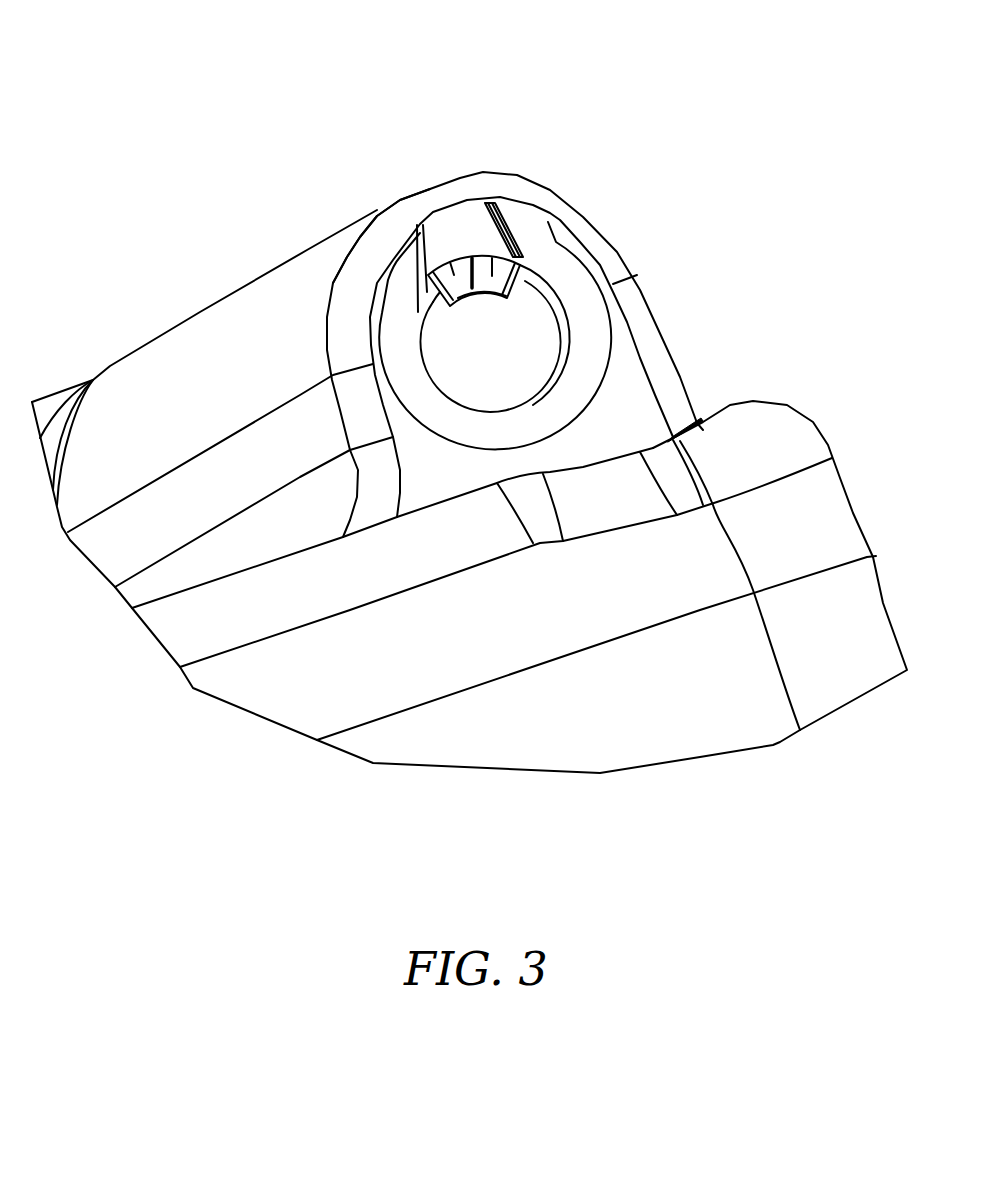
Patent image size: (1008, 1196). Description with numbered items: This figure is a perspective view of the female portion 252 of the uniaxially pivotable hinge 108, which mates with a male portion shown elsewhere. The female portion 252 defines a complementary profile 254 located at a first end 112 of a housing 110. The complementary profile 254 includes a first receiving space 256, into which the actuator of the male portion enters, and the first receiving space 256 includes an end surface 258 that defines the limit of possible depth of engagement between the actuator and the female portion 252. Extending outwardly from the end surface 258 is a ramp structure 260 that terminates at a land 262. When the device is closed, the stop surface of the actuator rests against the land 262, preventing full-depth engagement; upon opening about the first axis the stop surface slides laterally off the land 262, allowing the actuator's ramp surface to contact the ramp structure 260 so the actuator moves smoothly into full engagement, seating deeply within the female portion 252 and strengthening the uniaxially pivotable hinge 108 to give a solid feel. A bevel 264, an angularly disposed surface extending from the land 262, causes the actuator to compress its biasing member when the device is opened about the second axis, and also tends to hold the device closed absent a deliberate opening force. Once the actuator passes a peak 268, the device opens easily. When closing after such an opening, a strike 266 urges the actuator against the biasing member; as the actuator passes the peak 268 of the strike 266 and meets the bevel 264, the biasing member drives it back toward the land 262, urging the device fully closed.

The uniaxially pivotable hinge 108 is at (148, 60).
The housing 110 is at (90, 331).
The first end 112 is at (352, 282).
The female portion 252 is at (680, 148).
The complementary profile 254 is at (490, 314).
The first receiving space 256 is at (535, 312).
The end surface 258 is at (490, 369).
The ramp structure 260 is at (492, 275).
The land 262 is at (472, 288).
The bevel 264 is at (454, 275).
The strike 266 is at (417, 224).
The peak 268 is at (395, 232).